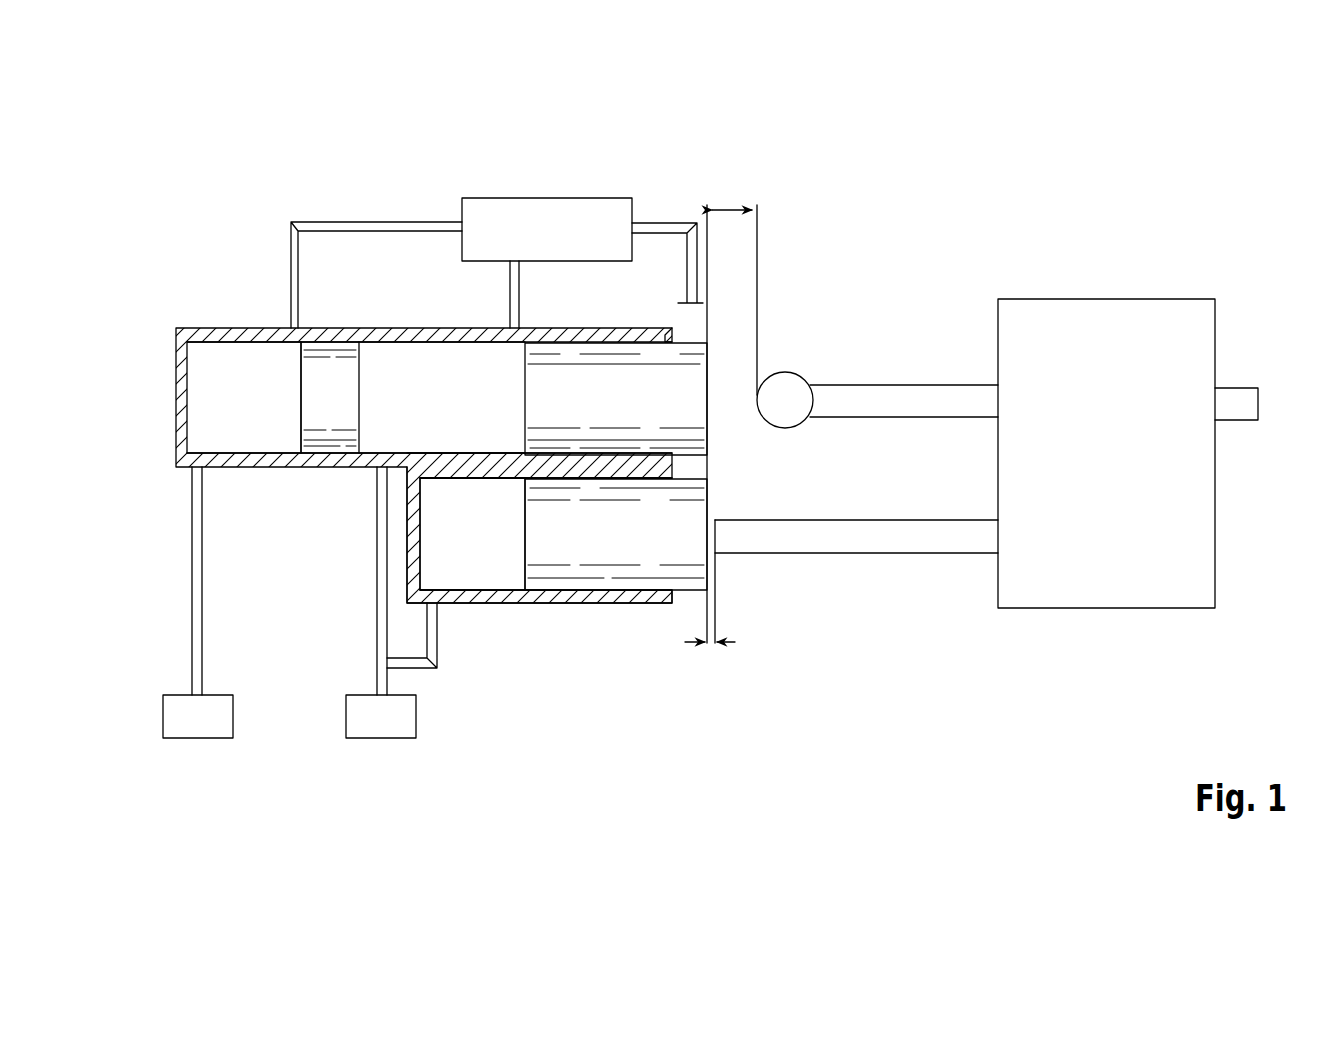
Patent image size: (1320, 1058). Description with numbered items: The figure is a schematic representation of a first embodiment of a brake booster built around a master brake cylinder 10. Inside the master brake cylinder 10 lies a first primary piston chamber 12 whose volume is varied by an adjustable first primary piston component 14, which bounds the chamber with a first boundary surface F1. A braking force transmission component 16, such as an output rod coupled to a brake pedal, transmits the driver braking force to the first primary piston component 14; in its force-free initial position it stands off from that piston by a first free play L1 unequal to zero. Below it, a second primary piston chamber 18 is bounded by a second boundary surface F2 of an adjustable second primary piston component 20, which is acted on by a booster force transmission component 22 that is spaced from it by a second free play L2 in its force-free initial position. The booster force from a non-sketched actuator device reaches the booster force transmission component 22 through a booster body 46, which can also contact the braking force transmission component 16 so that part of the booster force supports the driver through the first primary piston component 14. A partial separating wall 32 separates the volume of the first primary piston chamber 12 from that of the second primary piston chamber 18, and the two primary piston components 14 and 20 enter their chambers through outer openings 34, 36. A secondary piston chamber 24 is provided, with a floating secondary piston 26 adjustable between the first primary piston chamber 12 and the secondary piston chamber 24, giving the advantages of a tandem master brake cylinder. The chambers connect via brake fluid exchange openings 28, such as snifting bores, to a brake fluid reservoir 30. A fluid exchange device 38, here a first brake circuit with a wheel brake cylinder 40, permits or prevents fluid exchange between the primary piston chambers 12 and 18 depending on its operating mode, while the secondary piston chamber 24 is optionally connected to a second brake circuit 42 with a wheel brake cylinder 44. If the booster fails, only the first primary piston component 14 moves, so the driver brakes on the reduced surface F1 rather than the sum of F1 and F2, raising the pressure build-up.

The master brake cylinder 10 is at (185, 399).
The first primary piston chamber 12 is at (426, 411).
The first primary piston component 14 is at (633, 363).
The braking force transmission component 16 is at (892, 396).
The second primary piston chamber 18 is at (469, 517).
The second primary piston component 20 is at (603, 570).
The booster force transmission component 22 is at (902, 537).
The secondary piston chamber 24 is at (259, 409).
The secondary piston 26 is at (327, 358).
The brake fluid exchange opening 28 is at (290, 326).
The brake fluid reservoir 30 is at (546, 197).
The partial separating wall 32 is at (437, 487).
The outer opening 34 is at (682, 460).
The outer opening 36 is at (682, 476).
The fluid exchange device 38 is at (373, 573).
The wheel brake cylinder 40 is at (383, 740).
The second brake circuit 42 is at (209, 573).
The wheel brake cylinder 44 is at (200, 740).
The booster body 46 is at (1128, 610).
The first boundary surface F1 is at (521, 397).
The second boundary surface F2 is at (521, 545).
The first free play L1 is at (730, 207).
The second free play L2 is at (712, 648).